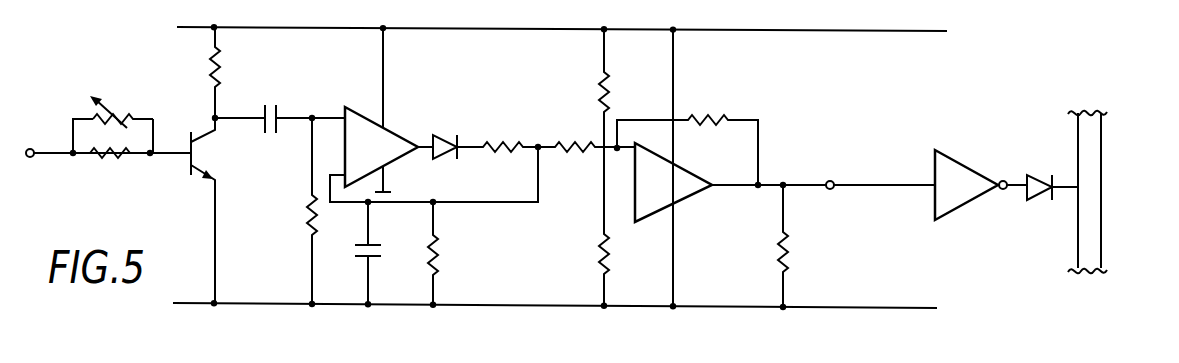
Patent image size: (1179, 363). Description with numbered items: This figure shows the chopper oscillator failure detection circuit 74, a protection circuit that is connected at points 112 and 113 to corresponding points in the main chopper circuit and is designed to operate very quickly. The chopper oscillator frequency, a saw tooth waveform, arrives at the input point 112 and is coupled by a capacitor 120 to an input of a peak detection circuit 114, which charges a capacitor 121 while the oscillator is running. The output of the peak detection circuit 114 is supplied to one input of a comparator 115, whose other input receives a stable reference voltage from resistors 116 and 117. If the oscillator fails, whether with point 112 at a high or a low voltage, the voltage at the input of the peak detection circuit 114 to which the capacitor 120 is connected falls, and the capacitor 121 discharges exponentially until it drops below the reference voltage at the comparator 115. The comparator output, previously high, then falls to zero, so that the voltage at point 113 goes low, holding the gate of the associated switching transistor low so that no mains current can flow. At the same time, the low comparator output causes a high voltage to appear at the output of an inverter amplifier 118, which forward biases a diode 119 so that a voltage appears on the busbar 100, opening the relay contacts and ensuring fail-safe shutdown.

The chopper oscillator failure detection circuit 74 is at (177, 76).
The busbar 100 is at (1090, 157).
The input point 112 is at (35, 158).
The output point 113 is at (833, 180).
The peak detection circuit 114 is at (401, 116).
The comparator 115 is at (690, 164).
The resistor 116 is at (597, 91).
The resistor 117 is at (595, 250).
The inverter amplifier 118 is at (967, 164).
The diode 119 is at (1038, 198).
The capacitor 120 is at (279, 94).
The capacitor 121 is at (382, 245).